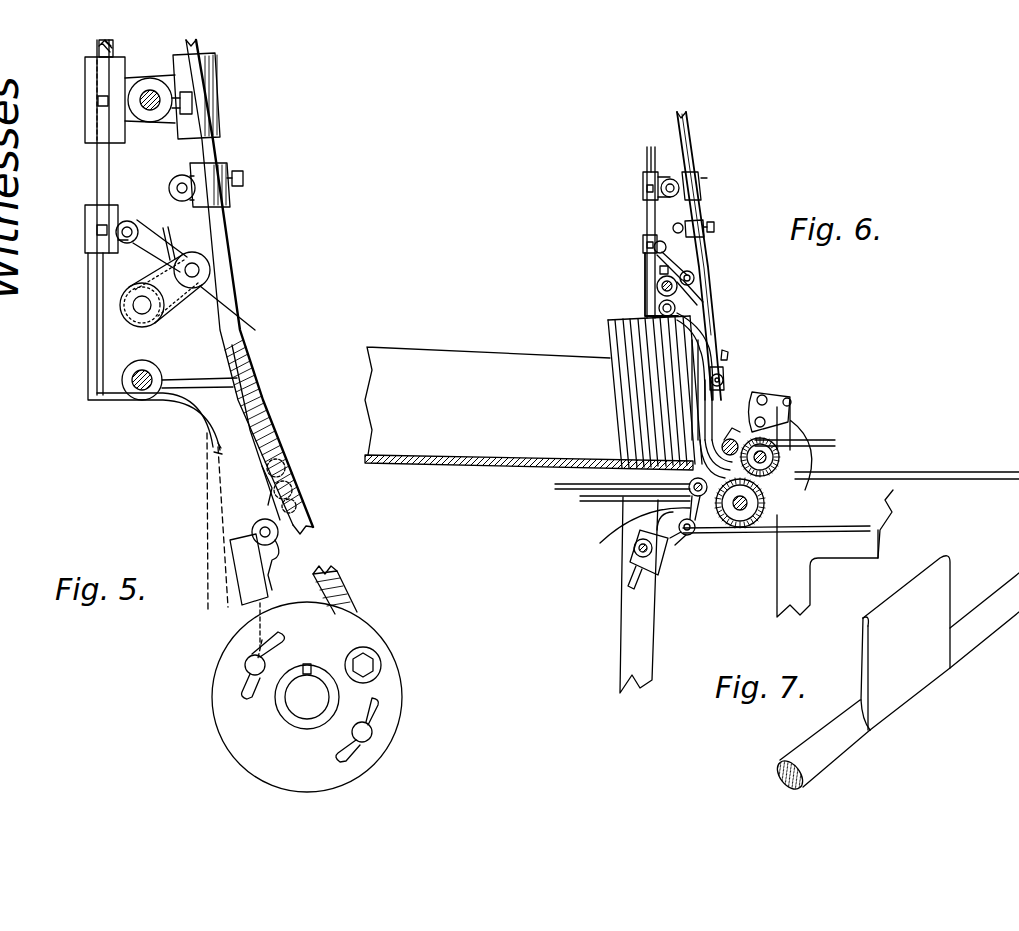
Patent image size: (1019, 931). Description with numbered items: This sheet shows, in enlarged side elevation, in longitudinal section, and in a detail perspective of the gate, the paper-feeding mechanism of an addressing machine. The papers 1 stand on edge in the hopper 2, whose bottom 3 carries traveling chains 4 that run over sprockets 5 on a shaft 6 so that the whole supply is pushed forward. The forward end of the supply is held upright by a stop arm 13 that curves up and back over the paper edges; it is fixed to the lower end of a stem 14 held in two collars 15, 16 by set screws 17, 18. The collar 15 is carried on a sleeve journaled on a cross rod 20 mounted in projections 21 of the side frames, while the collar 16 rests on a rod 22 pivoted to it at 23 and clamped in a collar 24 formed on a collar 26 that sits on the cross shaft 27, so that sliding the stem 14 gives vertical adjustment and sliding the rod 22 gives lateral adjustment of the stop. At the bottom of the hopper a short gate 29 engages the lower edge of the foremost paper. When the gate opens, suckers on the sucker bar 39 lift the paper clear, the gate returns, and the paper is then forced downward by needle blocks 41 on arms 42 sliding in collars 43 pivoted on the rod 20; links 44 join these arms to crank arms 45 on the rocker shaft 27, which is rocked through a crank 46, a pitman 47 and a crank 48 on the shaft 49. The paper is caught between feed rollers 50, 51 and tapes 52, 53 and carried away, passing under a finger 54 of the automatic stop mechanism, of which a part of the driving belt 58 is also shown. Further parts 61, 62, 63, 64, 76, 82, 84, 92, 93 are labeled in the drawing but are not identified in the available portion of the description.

In FIG. 5, the papers 1 is at (207, 496).
In FIG. 6, the papers 1 is at (625, 340).
In FIG. 6, the hopper 2 is at (402, 360).
In FIG. 6, the bottom 3 is at (478, 468).
In FIG. 6, the traveling chains 4 is at (604, 500).
In FIG. 6, the sprockets 5 is at (700, 496).
In FIG. 6, the shaft 6 is at (620, 484).
In FIG. 5, the stop arm 13 is at (213, 444).
In FIG. 6, the stop arm 13 is at (708, 332).
In FIG. 5, the stem 14 is at (112, 178).
In FIG. 6, the stem 14 is at (648, 278).
In FIG. 5, the collar 15 is at (100, 78).
In FIG. 6, the collar 15 is at (645, 178).
In FIG. 5, the collar 16 is at (115, 215).
In FIG. 6, the collar 16 is at (660, 262).
In FIG. 5, the set screw 17 is at (99, 102).
In FIG. 6, the set screw 17 is at (648, 190).
In FIG. 5, the set screw 18 is at (100, 230).
In FIG. 6, the set screw 18 is at (645, 245).
In FIG. 5, the cross rod 20 is at (158, 110).
In FIG. 6, the cross rod 20 is at (676, 190).
In FIG. 6, the projections 21 is at (704, 226).
In FIG. 5, the rod 22 is at (196, 305).
In FIG. 6, the rod 22 is at (699, 300).
In FIG. 5, the pivot 23 is at (120, 243).
In FIG. 6, the pivot 23 is at (668, 248).
In FIG. 5, the collar 24 is at (165, 235).
In FIG. 6, the collar 24 is at (694, 276).
In FIG. 5, the collar 26 is at (179, 348).
In FIG. 5, the cross shaft 27 is at (142, 305).
In FIG. 6, the cross shaft 27 is at (657, 287).
In FIG. 7, the gate 29 is at (938, 578).
In FIG. 6, the sucker bar 39 is at (722, 434).
In FIG. 6, the needle blocks 41 is at (724, 386).
In FIG. 5, the arms 42 is at (196, 45).
In FIG. 6, the arms 42 is at (690, 154).
In FIG. 5, the collars 43 is at (193, 101).
In FIG. 6, the collars 43 is at (690, 210).
In FIG. 5, the links 44 is at (206, 186).
In FIG. 6, the crank arms 45 is at (708, 283).
In FIG. 5, the crank 46 is at (178, 290).
In FIG. 5, the pitman 47 is at (258, 425).
In FIG. 5, the crank 48 is at (380, 700).
In FIG. 6, the shaft 49 is at (765, 503).
In FIG. 6, the feed roller 50 is at (742, 511).
In FIG. 7, the feed roller 50 is at (820, 747).
In FIG. 6, the feed roller 51 is at (780, 457).
In FIG. 6, the tape 52 is at (836, 443).
In FIG. 6, the tape 53 is at (835, 518).
In FIG. 6, the finger 54 is at (795, 440).
In FIG. 6, the driving belt 58 is at (700, 458).
In FIG. 6, the bracket 61 is at (786, 401).
In FIG. 6, the bolt 62 is at (790, 425).
In FIG. 6, the bolt 63 is at (743, 408).
In FIG. 6, the bolt 64 is at (763, 396).
In FIG. 6, the bar 76 is at (907, 475).
In FIG. 6, the link 82 is at (627, 524).
In FIG. 6, the block 84 is at (681, 537).
In FIG. 5, the pivot 92 is at (138, 390).
In FIG. 5, the arm 93 is at (276, 460).
In FIG. 6, the arm 93 is at (705, 420).